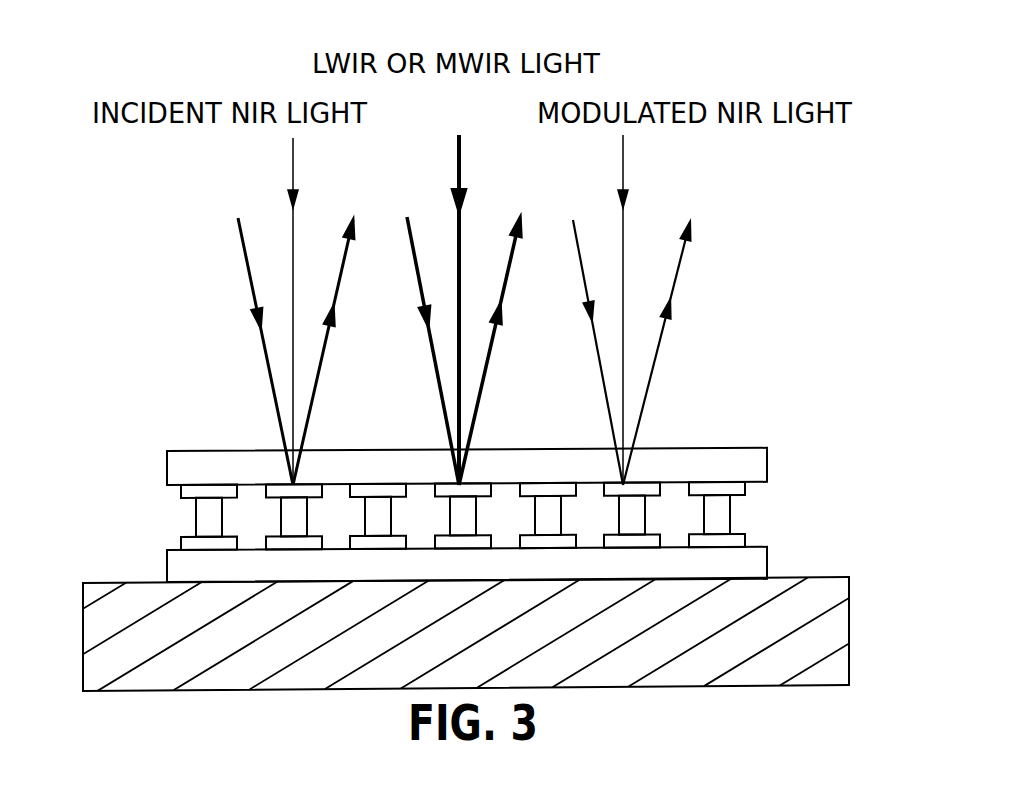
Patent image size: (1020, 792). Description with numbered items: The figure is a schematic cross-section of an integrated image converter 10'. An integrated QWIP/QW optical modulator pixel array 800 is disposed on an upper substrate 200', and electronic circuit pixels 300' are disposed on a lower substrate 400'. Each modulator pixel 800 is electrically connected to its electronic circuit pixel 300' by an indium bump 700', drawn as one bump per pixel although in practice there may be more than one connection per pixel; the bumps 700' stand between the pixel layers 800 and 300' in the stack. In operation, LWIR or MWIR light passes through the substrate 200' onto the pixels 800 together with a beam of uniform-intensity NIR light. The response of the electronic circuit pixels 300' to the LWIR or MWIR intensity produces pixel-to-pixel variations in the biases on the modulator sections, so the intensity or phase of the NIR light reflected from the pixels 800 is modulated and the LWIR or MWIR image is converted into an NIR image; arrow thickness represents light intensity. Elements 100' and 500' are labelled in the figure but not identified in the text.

The integrated image converter 10' is at (510, 535).
The light modulating layer 100' is at (745, 435).
The substrate 200' is at (517, 466).
The electronic circuit pixels 300' is at (410, 536).
The substrate 400' is at (525, 558).
The upper support pads 500' is at (463, 455).
The indium bumps 700' is at (780, 514).
The integrated QWIP/QW optical modulator pixel array 800 is at (177, 495).